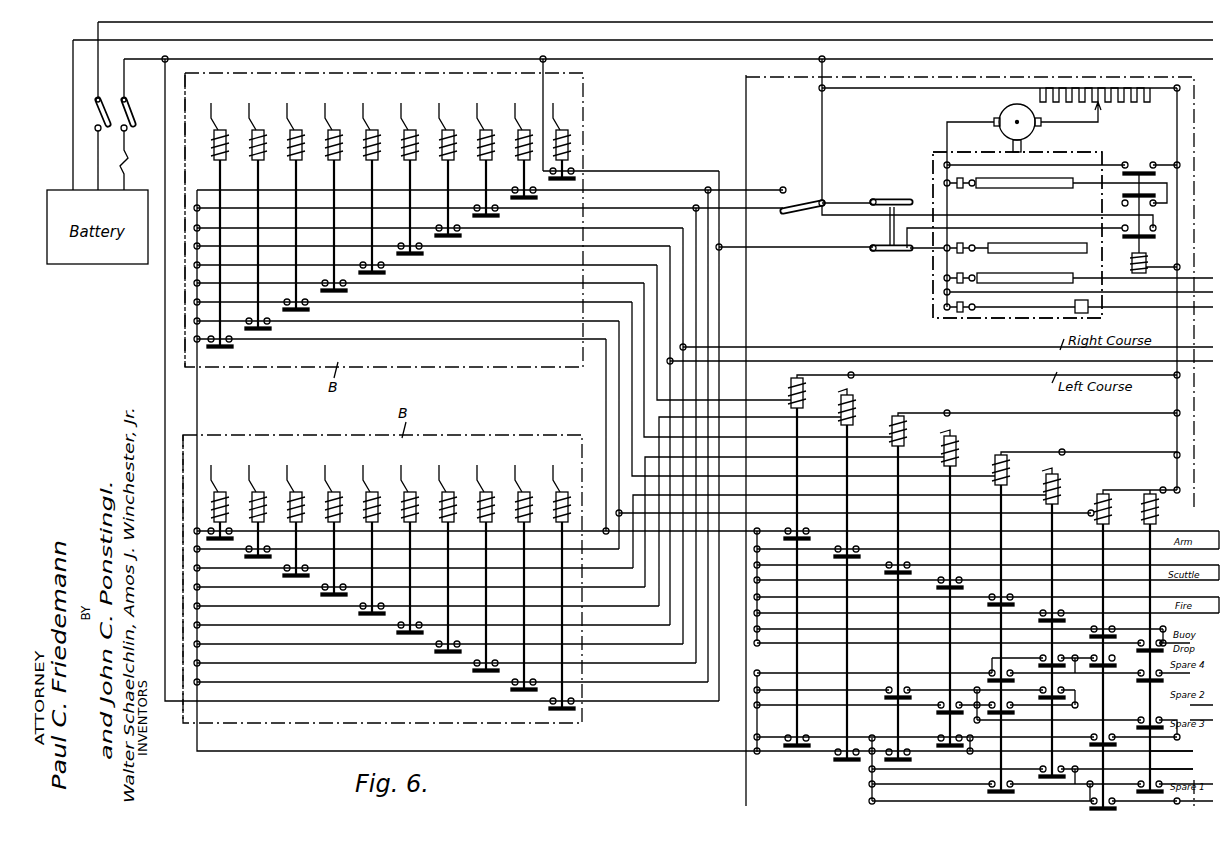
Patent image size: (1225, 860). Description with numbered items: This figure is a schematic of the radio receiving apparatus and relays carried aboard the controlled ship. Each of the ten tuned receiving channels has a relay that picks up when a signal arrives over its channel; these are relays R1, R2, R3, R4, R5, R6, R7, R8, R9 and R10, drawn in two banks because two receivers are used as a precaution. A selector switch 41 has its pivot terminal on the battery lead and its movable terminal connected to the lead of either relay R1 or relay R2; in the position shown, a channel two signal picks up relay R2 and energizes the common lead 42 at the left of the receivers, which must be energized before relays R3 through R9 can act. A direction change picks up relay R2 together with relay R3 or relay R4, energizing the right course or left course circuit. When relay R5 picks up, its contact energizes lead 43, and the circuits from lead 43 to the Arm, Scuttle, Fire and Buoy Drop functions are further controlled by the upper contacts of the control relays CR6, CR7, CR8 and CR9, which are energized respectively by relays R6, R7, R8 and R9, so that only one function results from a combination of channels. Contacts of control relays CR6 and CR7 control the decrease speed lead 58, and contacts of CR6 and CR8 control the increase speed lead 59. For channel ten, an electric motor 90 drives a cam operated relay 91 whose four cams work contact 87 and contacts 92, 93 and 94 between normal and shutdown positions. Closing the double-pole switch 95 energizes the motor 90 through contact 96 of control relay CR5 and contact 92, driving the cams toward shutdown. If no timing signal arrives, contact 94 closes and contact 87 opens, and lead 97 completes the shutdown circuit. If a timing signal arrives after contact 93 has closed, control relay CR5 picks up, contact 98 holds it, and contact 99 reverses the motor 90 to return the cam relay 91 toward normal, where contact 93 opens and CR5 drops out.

The selector switch 41 is at (810, 208).
The common lead 42 is at (757, 748).
The lead 43 is at (757, 600).
The lead 58 is at (1181, 746).
The lead 59 is at (1181, 762).
The contact 87 is at (944, 278).
The electric motor 90 is at (1034, 128).
The cam operated relay 91 is at (1104, 168).
The contact 92 is at (962, 189).
The contact 93 is at (944, 256).
The contact 94 is at (942, 308).
The double-pole switch 95 is at (888, 227).
The contact 96 is at (1127, 203).
The lead 97 is at (1020, 318).
The contact 98 is at (1127, 235).
The contact 99 is at (1140, 171).
The relay R1 is at (524, 397).
The relay R2 is at (486, 387).
The relay R3 is at (410, 368).
The relay R4 is at (448, 378).
The relay R5 is at (220, 321).
The relay R6 is at (372, 359).
The relay R7 is at (334, 349).
The relay R8 is at (296, 340).
The relay R9 is at (258, 330).
The relay R10 is at (563, 406).
The control relay CR5 is at (1146, 262).
The control relay CR6 is at (822, 569).
The control relay CR7 is at (924, 588).
The control relay CR8 is at (1026, 624).
The control relay CR9 is at (1145, 488).